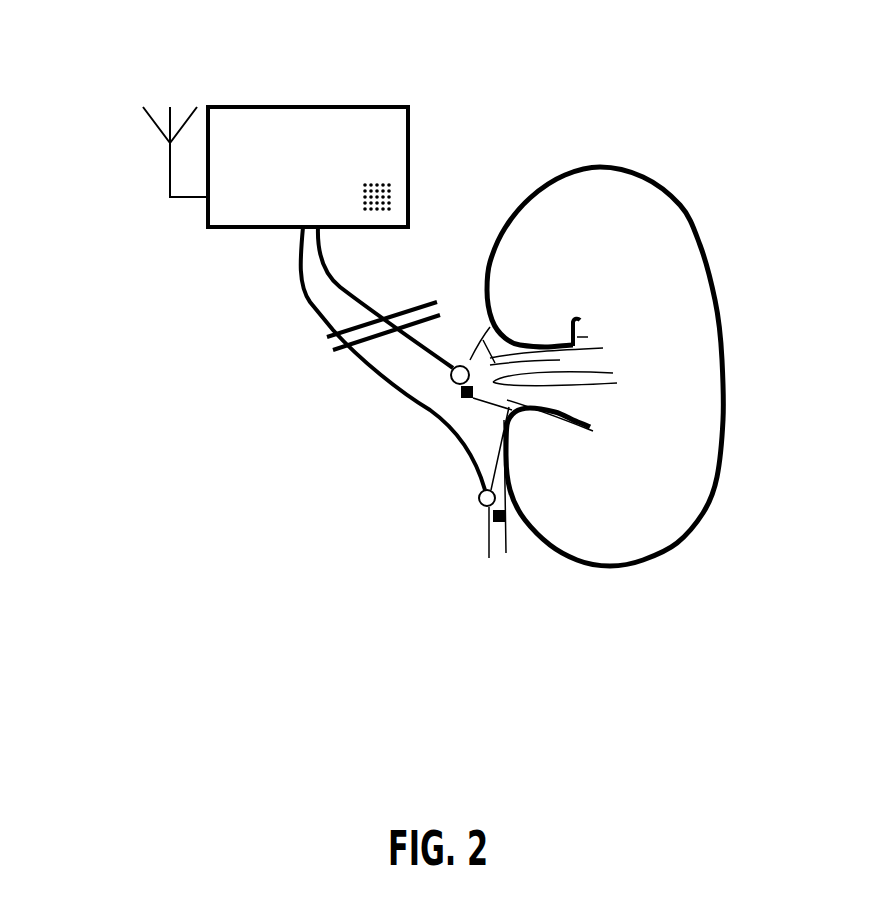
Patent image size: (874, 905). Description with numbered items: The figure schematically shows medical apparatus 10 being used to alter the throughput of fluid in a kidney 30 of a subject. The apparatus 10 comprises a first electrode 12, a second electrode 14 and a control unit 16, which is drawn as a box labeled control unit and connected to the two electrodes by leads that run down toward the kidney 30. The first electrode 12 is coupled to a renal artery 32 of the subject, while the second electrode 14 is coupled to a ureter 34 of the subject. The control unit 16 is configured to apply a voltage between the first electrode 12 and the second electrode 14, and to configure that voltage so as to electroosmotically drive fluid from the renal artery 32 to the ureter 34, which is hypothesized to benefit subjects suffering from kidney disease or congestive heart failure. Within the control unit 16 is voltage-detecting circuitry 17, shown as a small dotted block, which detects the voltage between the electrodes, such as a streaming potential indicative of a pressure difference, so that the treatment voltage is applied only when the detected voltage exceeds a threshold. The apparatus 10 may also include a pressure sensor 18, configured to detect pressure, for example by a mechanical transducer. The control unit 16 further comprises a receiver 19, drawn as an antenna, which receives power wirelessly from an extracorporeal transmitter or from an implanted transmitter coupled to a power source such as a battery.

The medical apparatus 10 is at (228, 286).
The first electrode 12 is at (340, 285).
The second electrode 14 is at (303, 290).
The control unit 16 is at (372, 107).
The voltage-detecting circuitry 17 is at (388, 188).
The pressure sensor 18 is at (453, 380).
The receiver 19 is at (170, 172).
The kidney 30 is at (723, 368).
The renal artery 32 is at (462, 395).
The ureter 34 is at (498, 540).